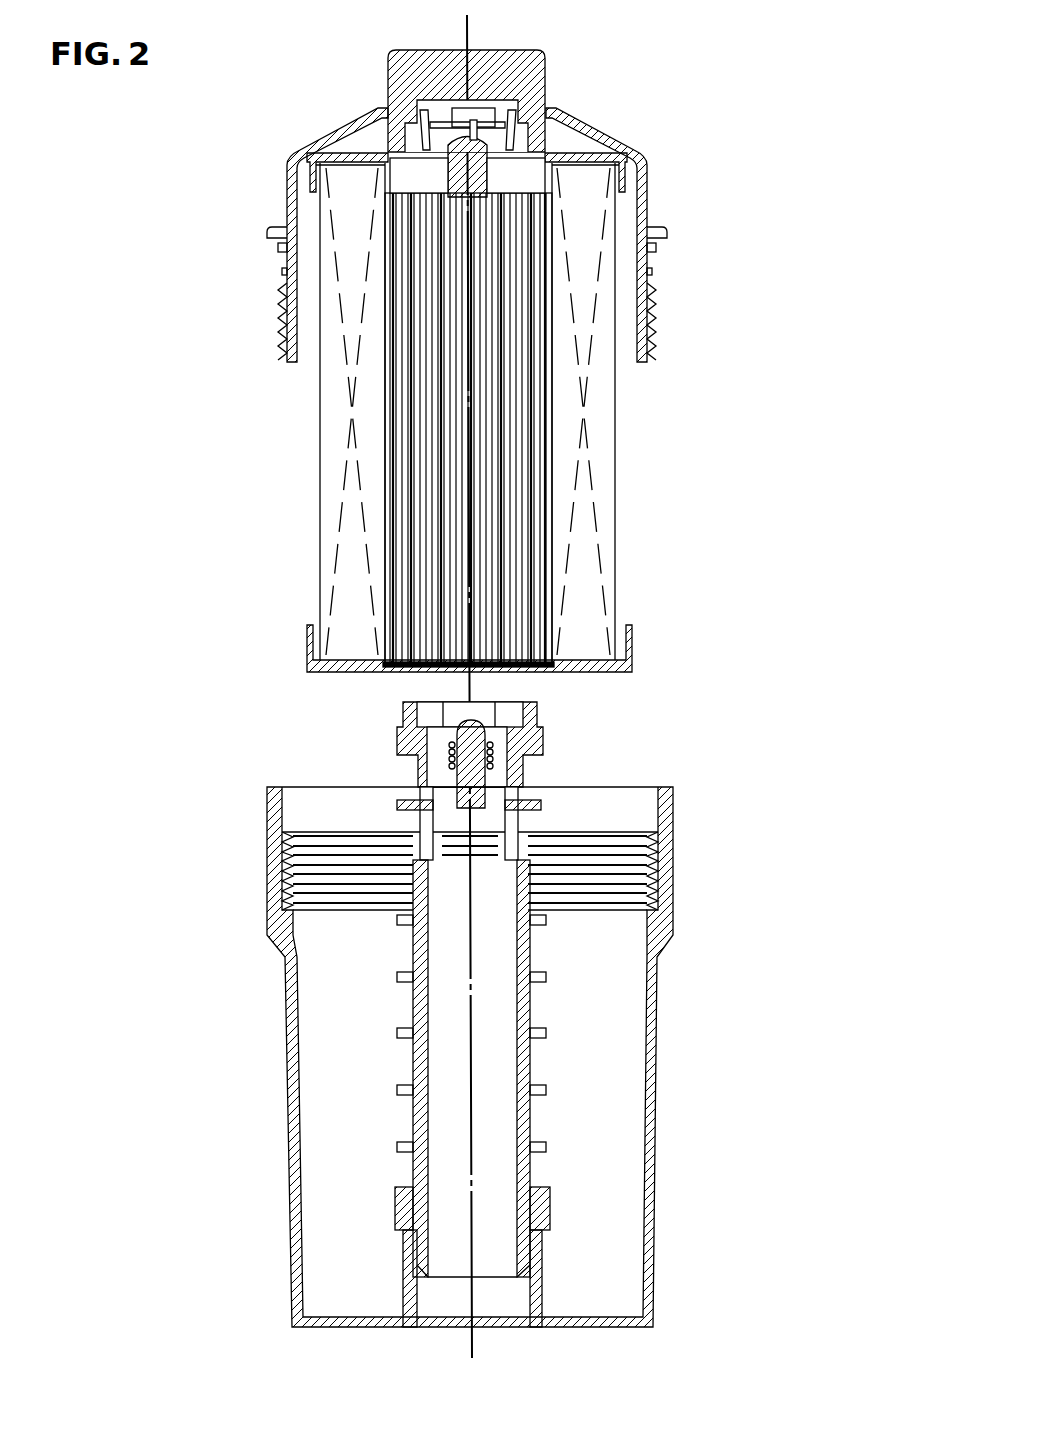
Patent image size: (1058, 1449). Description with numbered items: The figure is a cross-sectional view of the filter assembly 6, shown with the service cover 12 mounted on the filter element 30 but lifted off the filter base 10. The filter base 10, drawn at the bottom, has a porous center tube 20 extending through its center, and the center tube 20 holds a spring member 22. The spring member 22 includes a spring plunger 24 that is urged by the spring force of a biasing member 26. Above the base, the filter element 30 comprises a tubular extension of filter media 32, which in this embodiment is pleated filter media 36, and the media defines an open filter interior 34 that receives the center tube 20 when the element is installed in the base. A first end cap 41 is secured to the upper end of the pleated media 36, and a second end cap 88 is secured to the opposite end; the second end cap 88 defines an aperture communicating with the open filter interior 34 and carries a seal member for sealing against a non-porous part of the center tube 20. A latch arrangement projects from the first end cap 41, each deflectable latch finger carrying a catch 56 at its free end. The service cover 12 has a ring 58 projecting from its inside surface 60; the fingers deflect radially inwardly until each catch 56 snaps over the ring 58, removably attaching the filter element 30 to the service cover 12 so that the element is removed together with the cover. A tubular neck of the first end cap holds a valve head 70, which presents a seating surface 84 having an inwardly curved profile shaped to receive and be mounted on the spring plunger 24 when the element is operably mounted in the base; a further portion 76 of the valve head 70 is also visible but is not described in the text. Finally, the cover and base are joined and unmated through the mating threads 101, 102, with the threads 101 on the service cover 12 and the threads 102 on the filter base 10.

The filter assembly 6 is at (756, 112).
The filter base 10 is at (290, 1085).
The service cover 12 is at (294, 142).
The center tube 20 is at (414, 990).
The spring member 22 is at (511, 745).
The spring plunger 24 is at (458, 780).
The biasing member 26 is at (452, 746).
The filter element 30 is at (281, 510).
The filter media 32 is at (618, 432).
The open filter interior 34 is at (550, 560).
The pleated filter media 36 is at (618, 480).
The first end cap 41 is at (600, 153).
The catch 56 is at (521, 108).
The ring 58 is at (519, 141).
The inside surface 60 is at (433, 98).
The valve head 70 is at (502, 180).
The valve stem 76 is at (455, 122).
The seating surface 84 is at (458, 200).
The second end cap 88 is at (622, 672).
The mating threads 101 is at (660, 333).
The mating threads 102 is at (580, 884).